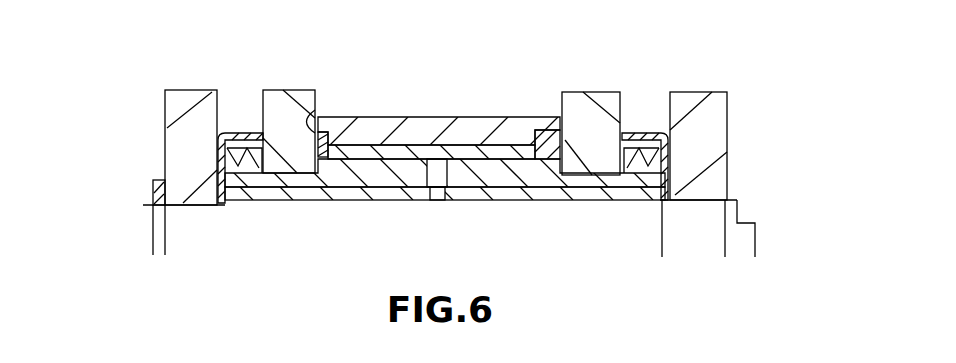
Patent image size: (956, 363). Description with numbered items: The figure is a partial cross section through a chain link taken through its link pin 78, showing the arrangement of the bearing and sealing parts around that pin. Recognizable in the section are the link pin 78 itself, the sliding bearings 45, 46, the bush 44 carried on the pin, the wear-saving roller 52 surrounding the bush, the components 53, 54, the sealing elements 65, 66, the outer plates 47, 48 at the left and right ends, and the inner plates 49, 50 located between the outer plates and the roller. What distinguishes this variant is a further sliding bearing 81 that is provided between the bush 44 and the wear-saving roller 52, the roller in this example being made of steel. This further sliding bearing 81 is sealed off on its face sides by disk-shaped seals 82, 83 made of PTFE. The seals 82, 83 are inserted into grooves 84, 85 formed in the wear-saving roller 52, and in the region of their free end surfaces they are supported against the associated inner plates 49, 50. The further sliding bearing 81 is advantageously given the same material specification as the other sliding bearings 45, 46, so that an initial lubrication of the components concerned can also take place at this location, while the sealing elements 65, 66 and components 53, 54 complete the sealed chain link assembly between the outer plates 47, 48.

The bush 44 is at (472, 172).
The sliding bearing 45 is at (384, 196).
The sliding bearing 46 is at (510, 195).
The outer plate 47 is at (175, 112).
The outer plate 48 is at (715, 122).
The inner plate 49 is at (275, 98).
The inner plate 50 is at (607, 100).
The wear-saving roller 52 is at (490, 122).
The component 53 is at (242, 133).
The component 54 is at (647, 133).
The sealing element 65 is at (250, 165).
The sealing element 66 is at (646, 180).
The link pin 78 is at (331, 230).
The further sliding bearing 81 is at (462, 145).
The disk-shaped seal 82 is at (307, 133).
The disk-shaped seal 83 is at (576, 183).
The groove 84 is at (333, 138).
The groove 85 is at (540, 130).